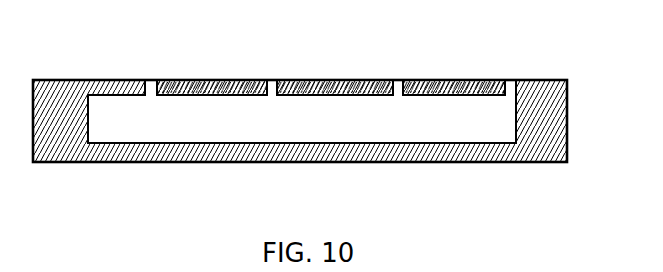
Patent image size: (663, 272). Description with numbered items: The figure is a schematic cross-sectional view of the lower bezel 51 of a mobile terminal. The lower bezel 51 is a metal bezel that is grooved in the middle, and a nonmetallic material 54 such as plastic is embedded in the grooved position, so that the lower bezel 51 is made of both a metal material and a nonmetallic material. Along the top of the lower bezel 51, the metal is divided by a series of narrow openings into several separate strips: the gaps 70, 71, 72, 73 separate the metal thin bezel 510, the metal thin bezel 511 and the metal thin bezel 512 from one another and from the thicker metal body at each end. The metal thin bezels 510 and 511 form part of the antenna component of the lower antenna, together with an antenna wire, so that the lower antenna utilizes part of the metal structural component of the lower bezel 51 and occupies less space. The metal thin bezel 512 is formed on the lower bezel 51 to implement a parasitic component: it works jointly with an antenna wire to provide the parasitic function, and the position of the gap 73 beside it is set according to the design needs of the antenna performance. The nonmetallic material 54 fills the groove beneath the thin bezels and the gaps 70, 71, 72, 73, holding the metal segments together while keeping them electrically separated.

The lower bezel 51 is at (142, 163).
The nonmetallic material 54 is at (343, 123).
The first opening 70 is at (148, 80).
The second opening 71 is at (273, 80).
The third opening 72 is at (400, 80).
The gap 73 is at (512, 80).
The metal thin bezel 510 is at (215, 90).
The metal thin bezel 511 is at (338, 90).
The metal thin bezel 512 is at (463, 89).